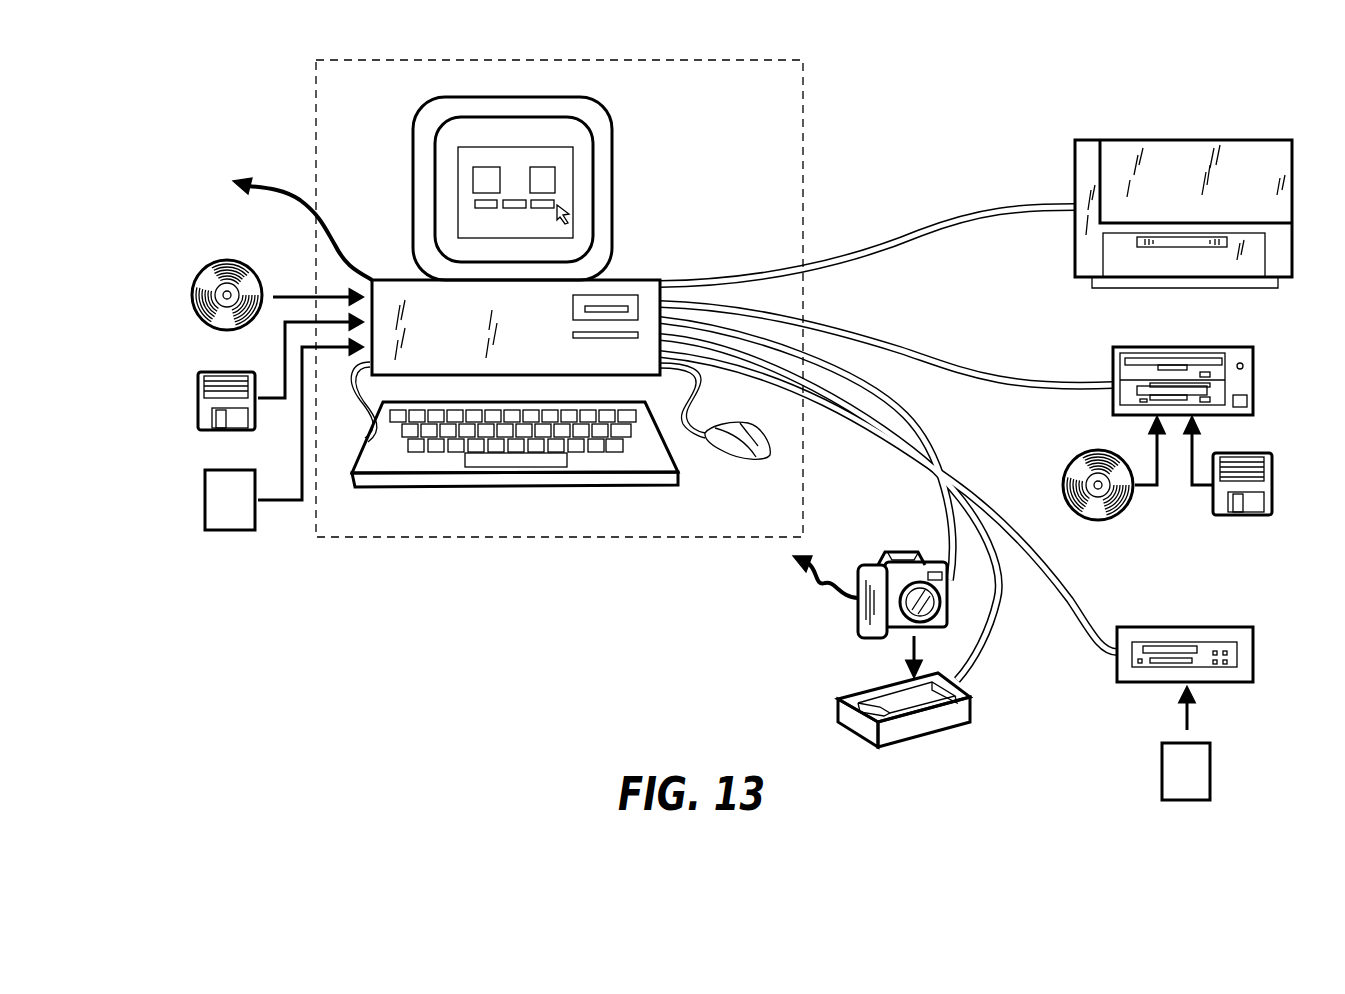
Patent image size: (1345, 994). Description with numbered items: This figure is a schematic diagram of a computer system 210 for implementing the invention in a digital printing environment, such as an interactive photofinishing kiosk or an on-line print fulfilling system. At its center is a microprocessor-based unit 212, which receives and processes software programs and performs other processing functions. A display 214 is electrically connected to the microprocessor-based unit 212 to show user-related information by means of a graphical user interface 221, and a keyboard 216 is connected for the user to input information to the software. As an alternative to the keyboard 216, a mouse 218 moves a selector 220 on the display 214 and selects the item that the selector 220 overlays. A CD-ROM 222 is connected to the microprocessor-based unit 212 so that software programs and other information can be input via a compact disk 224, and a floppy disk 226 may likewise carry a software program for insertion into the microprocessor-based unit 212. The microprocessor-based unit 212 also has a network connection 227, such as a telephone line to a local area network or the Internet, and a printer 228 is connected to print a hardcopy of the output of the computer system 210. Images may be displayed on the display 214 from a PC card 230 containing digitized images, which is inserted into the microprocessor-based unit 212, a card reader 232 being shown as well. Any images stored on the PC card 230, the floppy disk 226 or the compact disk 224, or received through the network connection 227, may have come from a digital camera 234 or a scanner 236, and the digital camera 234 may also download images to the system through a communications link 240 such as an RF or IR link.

The computer system 210 is at (316, 104).
The microprocessor-based unit 212 is at (398, 278).
The display 214 is at (426, 107).
The keyboard 216 is at (440, 489).
The mouse 218 is at (726, 450).
The selector 220 is at (570, 212).
The graphical user interface 221 is at (573, 168).
The CD-ROM 222 is at (1253, 372).
The compact disk 224 is at (192, 296).
The floppy disk 226 is at (196, 405).
The network connection 227 is at (285, 200).
The printer 228 is at (1165, 140).
The PC card 230 is at (203, 503).
The card reader 232 is at (1253, 650).
The digital camera 234 is at (902, 550).
The scanner 236 is at (836, 710).
The communications link 240 is at (822, 592).